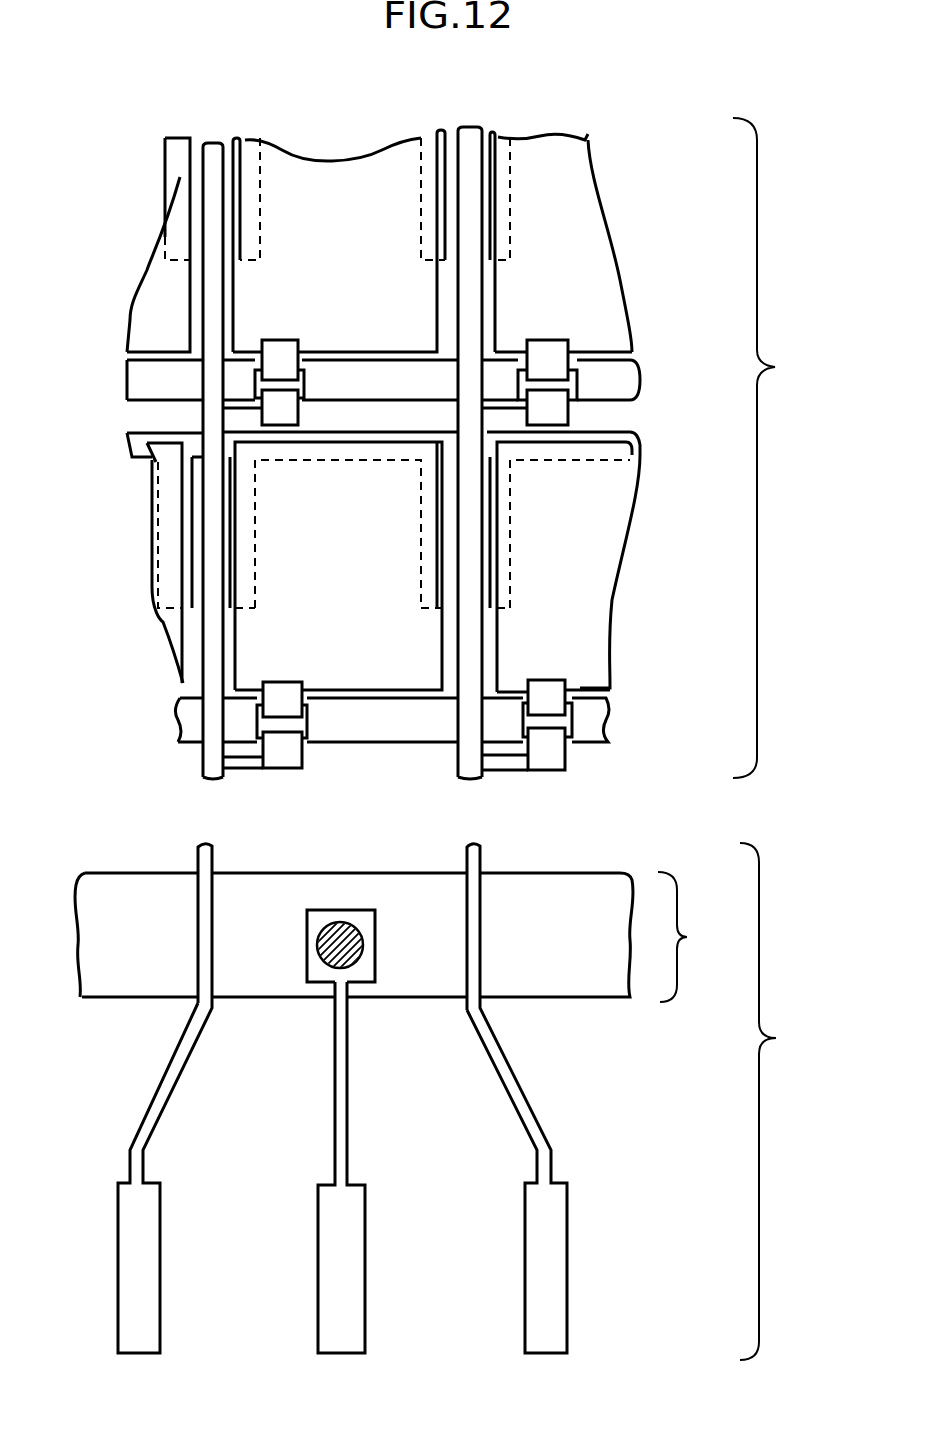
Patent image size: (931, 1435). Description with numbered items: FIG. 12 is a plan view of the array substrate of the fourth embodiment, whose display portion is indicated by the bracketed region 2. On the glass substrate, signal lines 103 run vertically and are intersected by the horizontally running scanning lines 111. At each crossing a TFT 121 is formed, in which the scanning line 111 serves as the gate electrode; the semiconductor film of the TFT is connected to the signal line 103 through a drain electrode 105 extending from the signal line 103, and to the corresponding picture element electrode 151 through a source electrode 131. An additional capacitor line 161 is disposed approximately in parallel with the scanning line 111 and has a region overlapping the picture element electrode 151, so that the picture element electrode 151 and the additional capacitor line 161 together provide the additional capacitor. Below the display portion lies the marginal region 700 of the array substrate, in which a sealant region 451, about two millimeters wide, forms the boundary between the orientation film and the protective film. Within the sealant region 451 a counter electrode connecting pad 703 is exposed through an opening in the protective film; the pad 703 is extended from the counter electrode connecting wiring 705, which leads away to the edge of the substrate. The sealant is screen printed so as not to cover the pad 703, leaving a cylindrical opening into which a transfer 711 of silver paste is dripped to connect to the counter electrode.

The thin film transistor array substrate 2 is at (764, 448).
The signal line 103 is at (212, 150).
The drain electrode 105 is at (285, 413).
The scanning line 111 is at (300, 386).
The TFT 121 is at (312, 370).
The source electrode 131 is at (280, 357).
The picture element electrode 151 is at (590, 243).
The additional capacitor line 161 is at (257, 137).
The sealant region 451 is at (407, 937).
The marginal region 700 is at (787, 1101).
The counter electrode connecting pad 703 is at (317, 970).
The counter electrode connecting wiring 705 is at (150, 1107).
The transfer 711 is at (345, 947).